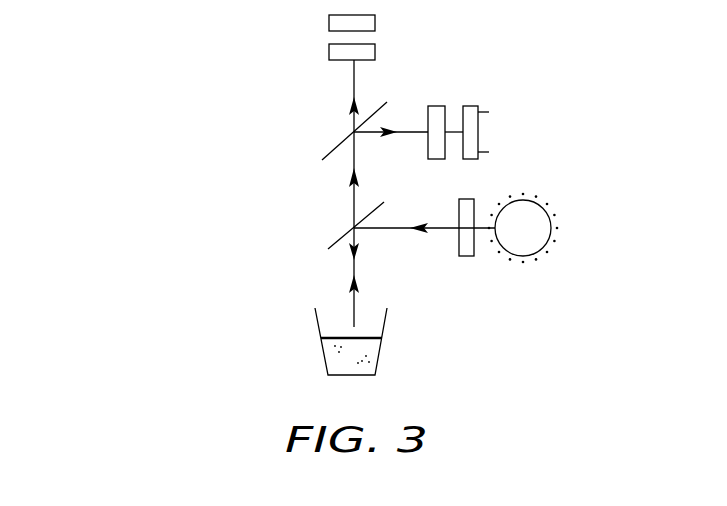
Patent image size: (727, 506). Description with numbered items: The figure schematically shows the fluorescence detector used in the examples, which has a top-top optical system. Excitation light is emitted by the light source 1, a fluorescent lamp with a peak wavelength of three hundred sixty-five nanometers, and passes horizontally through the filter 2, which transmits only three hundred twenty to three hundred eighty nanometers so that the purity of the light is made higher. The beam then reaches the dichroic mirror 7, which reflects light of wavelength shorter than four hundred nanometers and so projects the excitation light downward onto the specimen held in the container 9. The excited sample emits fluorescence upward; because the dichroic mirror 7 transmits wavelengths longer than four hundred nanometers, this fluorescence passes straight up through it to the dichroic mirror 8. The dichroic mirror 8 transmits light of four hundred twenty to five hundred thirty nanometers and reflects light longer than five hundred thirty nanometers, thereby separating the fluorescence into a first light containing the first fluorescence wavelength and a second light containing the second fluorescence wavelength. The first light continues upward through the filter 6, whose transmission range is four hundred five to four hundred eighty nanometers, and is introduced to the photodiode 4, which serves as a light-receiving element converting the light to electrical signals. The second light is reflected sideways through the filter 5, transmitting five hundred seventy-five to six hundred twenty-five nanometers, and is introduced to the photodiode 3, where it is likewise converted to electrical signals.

The light source 1 is at (553, 223).
The filter 2 is at (464, 257).
The photodiode 3 is at (470, 106).
The photodiode 4 is at (329, 24).
The filter 5 is at (440, 105).
The filter 6 is at (329, 58).
The dichroic mirror 7 is at (328, 249).
The dichroic mirror 8 is at (322, 160).
The container 9 is at (378, 363).